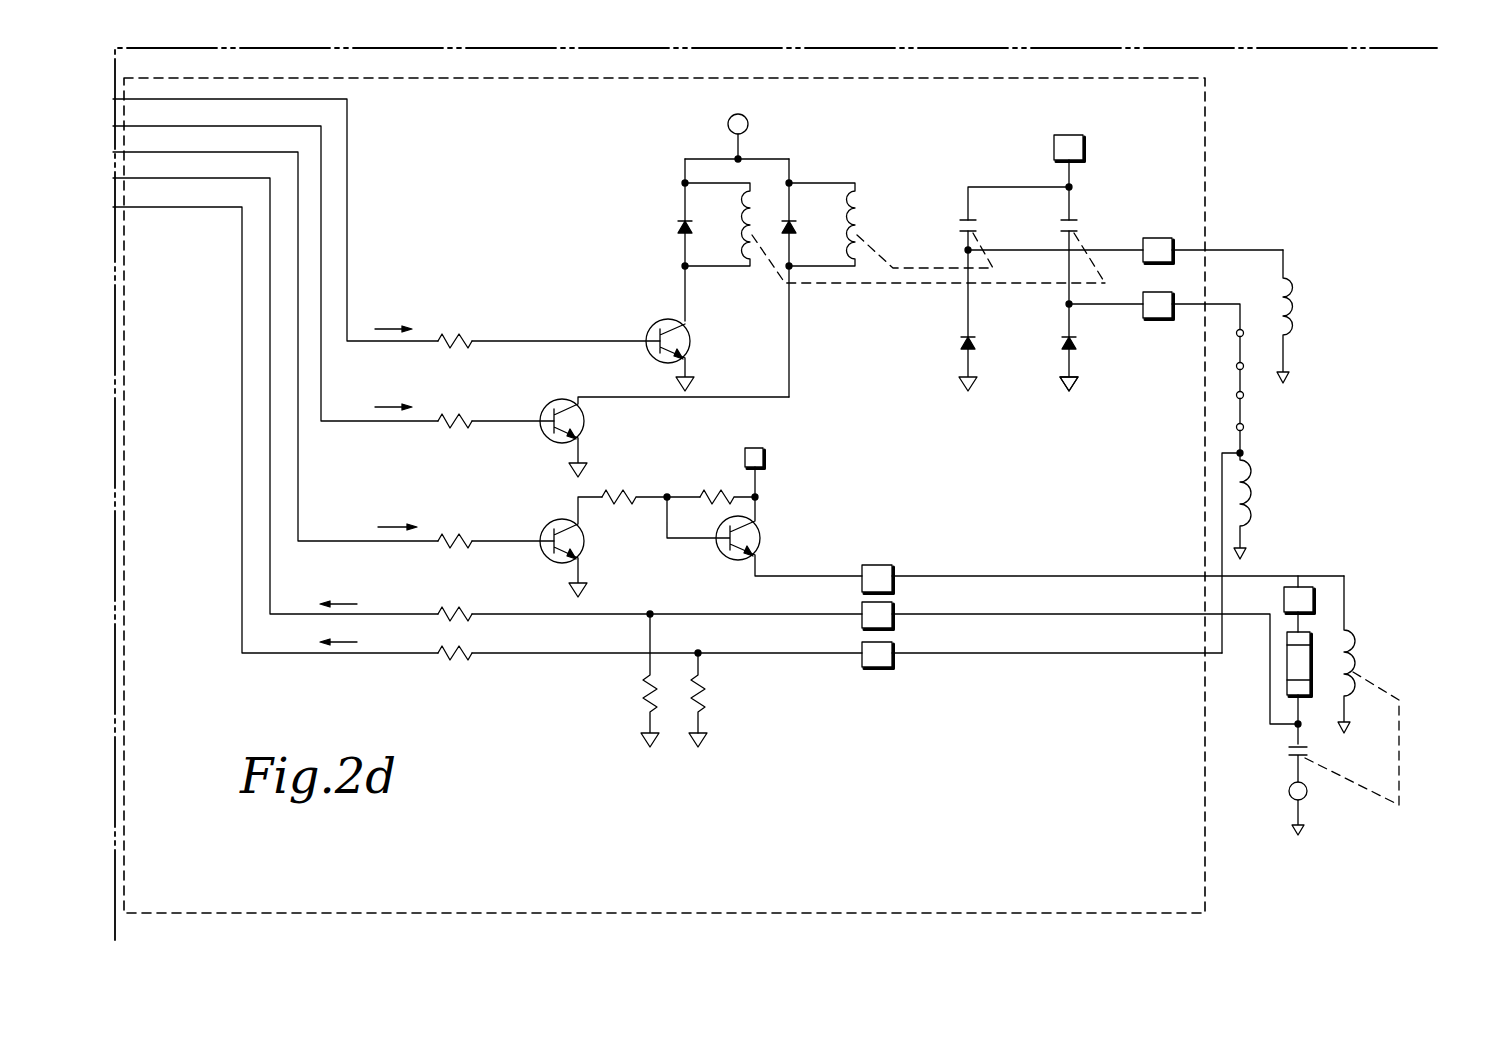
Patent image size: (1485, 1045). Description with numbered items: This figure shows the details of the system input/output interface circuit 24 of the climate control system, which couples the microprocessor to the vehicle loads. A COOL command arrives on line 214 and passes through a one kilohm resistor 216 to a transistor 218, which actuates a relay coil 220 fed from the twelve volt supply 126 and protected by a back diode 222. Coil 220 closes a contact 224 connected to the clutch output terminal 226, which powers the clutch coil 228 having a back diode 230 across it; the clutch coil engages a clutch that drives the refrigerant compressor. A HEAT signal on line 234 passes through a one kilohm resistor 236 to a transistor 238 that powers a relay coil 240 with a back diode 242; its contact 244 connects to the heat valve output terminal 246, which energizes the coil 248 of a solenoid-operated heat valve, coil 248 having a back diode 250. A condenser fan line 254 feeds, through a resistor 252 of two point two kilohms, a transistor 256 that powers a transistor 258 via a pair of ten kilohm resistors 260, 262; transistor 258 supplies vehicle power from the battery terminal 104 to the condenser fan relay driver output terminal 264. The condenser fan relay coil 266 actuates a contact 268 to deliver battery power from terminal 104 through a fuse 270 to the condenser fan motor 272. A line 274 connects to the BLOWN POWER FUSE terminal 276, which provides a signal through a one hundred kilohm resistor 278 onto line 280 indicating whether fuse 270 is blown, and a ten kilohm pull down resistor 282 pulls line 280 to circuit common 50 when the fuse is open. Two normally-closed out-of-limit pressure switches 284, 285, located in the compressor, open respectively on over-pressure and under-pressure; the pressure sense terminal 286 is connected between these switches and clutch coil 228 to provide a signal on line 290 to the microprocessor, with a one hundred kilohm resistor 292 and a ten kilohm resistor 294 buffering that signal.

The system input/output interface circuit 24 is at (1035, 788).
The circuit common 50 is at (1072, 393).
The vehicle battery terminal 104 is at (1065, 135).
The 12 volt supply terminal 126 is at (748, 128).
The COOL command line 214 is at (347, 208).
The 1 K resistor 216 is at (470, 337).
The transistor 218 is at (686, 334).
The relay coil 220 is at (746, 228).
The back diode 222 is at (680, 222).
The contact 224 is at (1075, 222).
The clutch output terminal 226 is at (1175, 304).
The clutch coil 228 is at (1252, 500).
The back diode 230 is at (1075, 345).
The HEAT signal line 234 is at (321, 293).
The 1 K resistor 236 is at (470, 417).
The transistor 238 is at (583, 433).
The relay coil 240 is at (857, 218).
The back diode 242 is at (792, 222).
The contact 244 is at (965, 222).
The heat valve output terminal 246 is at (1175, 246).
The heat valve coil 248 is at (1292, 300).
The back diode 250 is at (966, 343).
The 2.2 K resistor 252 is at (460, 538).
The condenser fan line 254 is at (298, 478).
The transistor 256 is at (583, 548).
The transistor 258 is at (760, 545).
The 10 K resistor 260 is at (622, 494).
The 10 K resistor 262 is at (707, 493).
The condenser fan relay driver output terminal 264 is at (882, 565).
The condenser fan relay coil 266 is at (1355, 668).
The contact 268 is at (1310, 760).
The fuse 270 is at (1312, 640).
The condenser fan motor 272 is at (1305, 798).
The line 274 is at (997, 613).
The BLOWN POWER FUSE terminal 276 is at (860, 613).
The 100 K resistor 278 is at (450, 610).
The line 280 is at (270, 455).
The 10 K pull down resistor 282 is at (645, 697).
The out-of-limit pressure switch 284 is at (1245, 357).
The out-of-limit pressure switch 285 is at (1245, 425).
The pressure sense terminal 286 is at (875, 670).
The line 290 is at (242, 518).
The 100 K resistor 292 is at (455, 658).
The 10 K resistor 294 is at (705, 697).